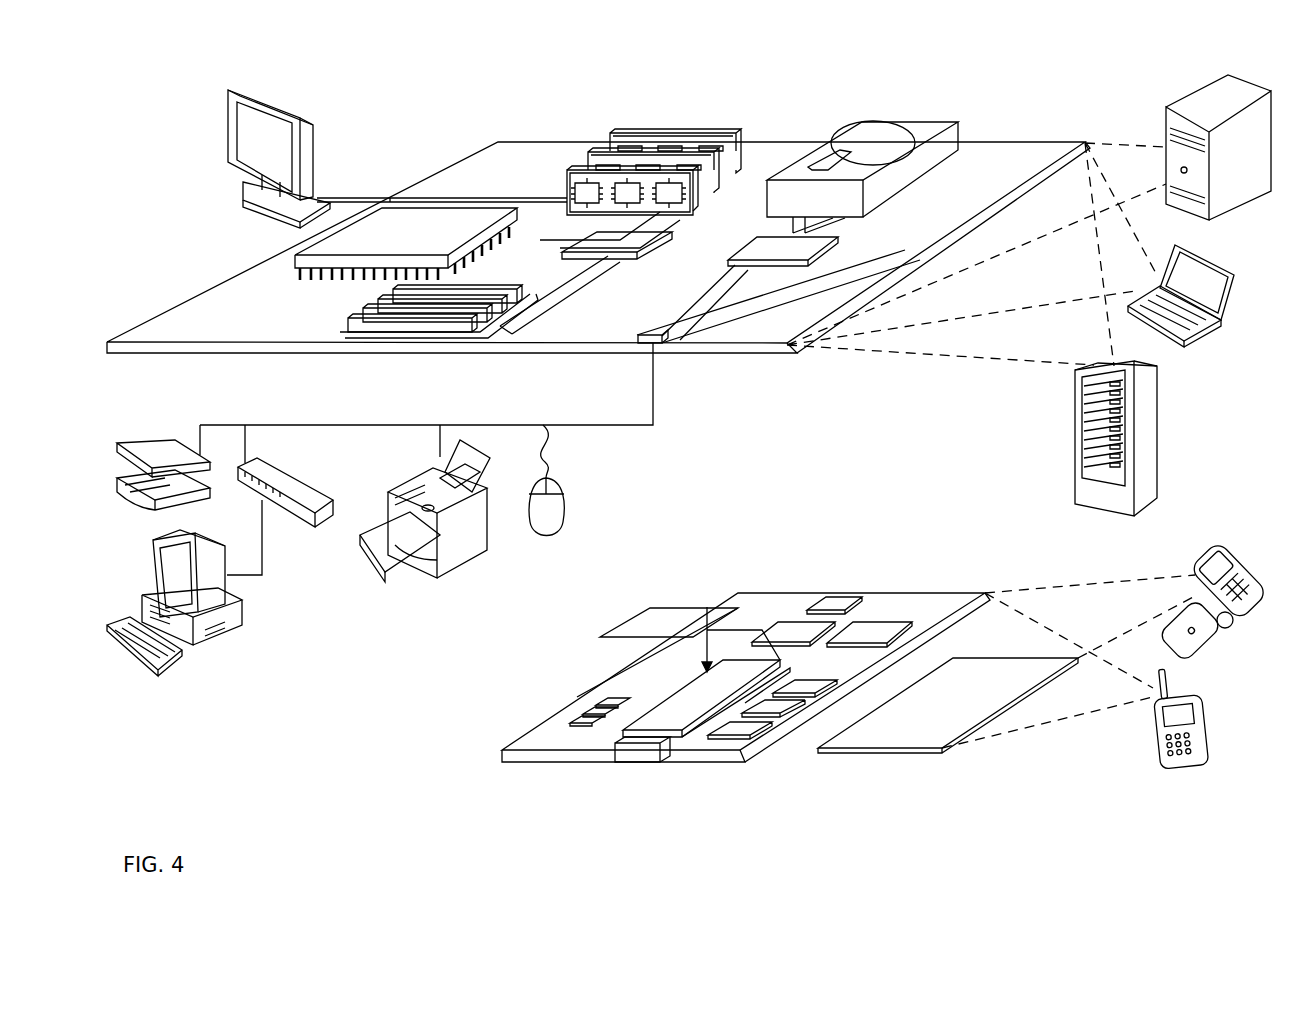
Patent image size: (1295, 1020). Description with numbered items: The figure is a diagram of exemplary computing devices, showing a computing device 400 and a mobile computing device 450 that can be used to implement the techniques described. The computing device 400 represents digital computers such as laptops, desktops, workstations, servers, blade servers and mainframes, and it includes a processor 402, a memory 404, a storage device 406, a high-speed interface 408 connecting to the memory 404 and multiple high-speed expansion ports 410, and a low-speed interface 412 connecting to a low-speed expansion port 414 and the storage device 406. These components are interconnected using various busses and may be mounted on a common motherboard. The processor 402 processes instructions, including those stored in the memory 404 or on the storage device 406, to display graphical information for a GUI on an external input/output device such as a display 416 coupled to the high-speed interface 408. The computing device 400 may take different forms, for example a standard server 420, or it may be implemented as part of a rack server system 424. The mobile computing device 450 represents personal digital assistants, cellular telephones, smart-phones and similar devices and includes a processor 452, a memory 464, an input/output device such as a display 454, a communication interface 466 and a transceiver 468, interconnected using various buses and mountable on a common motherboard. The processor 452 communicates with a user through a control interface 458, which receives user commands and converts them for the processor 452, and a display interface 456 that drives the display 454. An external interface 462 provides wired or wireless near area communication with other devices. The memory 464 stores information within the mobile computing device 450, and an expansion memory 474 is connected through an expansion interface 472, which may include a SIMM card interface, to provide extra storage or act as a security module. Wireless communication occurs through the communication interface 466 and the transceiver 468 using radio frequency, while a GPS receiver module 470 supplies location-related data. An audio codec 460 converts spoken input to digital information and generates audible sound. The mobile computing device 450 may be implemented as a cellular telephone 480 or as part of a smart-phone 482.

The computing device 400 is at (428, 110).
The processor 402 is at (297, 258).
The memory 404 is at (628, 130).
The storage device 406 is at (850, 125).
The high-speed interface 408 is at (593, 243).
The high-speed expansion ports 410 is at (373, 313).
The low-speed interface 412 is at (765, 243).
The low-speed expansion port 414 is at (663, 340).
The display 416 is at (236, 92).
The standard server 420 is at (1164, 126).
The rack server system 424 is at (1075, 462).
The mobile computing device 450 is at (478, 765).
The processor 452 is at (676, 721).
The display 454 is at (908, 738).
The display interface 456 is at (740, 727).
The control interface 458 is at (774, 704).
The audio codec 460 is at (800, 687).
The external interface 462 is at (642, 750).
The memory 464 is at (586, 710).
The communication interface 466 is at (793, 628).
The transceiver 468 is at (870, 628).
The GPS receiver module 470 is at (845, 595).
The expansion interface 472 is at (707, 607).
The expansion memory 474 is at (648, 607).
The cellular telephone 480 is at (1213, 553).
The smart-phone 482 is at (1157, 727).